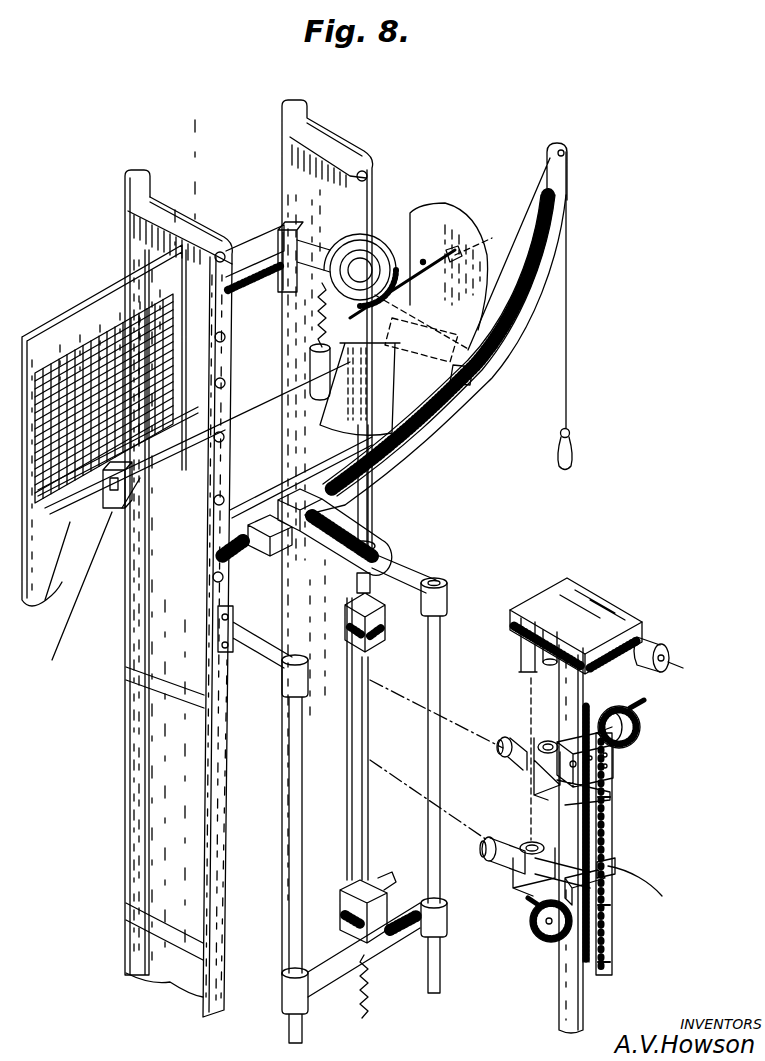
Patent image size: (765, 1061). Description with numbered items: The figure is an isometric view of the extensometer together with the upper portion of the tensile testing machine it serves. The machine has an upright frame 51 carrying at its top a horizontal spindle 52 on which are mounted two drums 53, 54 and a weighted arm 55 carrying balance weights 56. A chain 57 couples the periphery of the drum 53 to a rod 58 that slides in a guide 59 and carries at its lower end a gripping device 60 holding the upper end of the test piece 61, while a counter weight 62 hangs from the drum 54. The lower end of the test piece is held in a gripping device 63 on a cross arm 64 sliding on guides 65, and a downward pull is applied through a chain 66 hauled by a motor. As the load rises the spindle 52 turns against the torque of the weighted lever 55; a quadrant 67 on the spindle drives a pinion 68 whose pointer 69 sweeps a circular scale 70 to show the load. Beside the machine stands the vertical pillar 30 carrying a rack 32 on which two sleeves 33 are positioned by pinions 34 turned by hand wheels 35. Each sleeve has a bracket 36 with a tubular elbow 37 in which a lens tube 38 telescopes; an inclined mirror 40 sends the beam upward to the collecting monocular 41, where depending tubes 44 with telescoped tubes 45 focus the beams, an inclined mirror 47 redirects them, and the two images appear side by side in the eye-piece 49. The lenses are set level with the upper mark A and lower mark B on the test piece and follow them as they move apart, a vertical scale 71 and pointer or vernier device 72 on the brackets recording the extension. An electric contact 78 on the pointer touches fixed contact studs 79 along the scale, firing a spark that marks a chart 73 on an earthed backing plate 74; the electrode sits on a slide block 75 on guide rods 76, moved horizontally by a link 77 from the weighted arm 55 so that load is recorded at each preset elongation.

The vertical pillar 30 is at (568, 696).
The rack 32 is at (588, 733).
The sleeves 33 is at (546, 742).
The pinion 34 is at (610, 760).
The hand wheel 35 is at (627, 722).
The bracket 36 is at (538, 746).
The tubular elbow 37 is at (520, 768).
The tube 38 is at (498, 757).
The inclined mirror 40 is at (547, 790).
The collecting monocular 41 is at (605, 597).
The tubes 44 is at (527, 640).
The tube 45 is at (527, 662).
The inclined mirror 47 is at (537, 604).
The eye-piece 49 is at (647, 645).
The upright frame 51 is at (313, 165).
The horizontal spindle 52 is at (267, 230).
The drum 53 is at (372, 253).
The drum 54 is at (288, 232).
The arm 55 is at (446, 420).
The balance weights 56 is at (528, 350).
The chain 57 is at (312, 335).
The rod 58 is at (366, 516).
The guide 59 is at (385, 562).
The gripping device 60 is at (385, 627).
The test piece 61 is at (368, 805).
The counter weight 62 is at (314, 361).
The gripping device 63 is at (380, 884).
The cross arm 64 is at (388, 950).
The guides 65 is at (296, 852).
The chain 66 is at (360, 1018).
The quadrant 67 is at (420, 312).
The pinion 68 is at (373, 352).
The pointer 69 is at (457, 244).
The circular scale 70 is at (434, 213).
The vertical scale 71 is at (612, 838).
The pointer or vernier device 72 is at (566, 890).
The chart 73 is at (112, 330).
The backing plate 74 is at (68, 338).
The slide block 75 is at (118, 512).
The guide rods 76 is at (72, 582).
The link 77 is at (266, 413).
The electric contact 78 is at (616, 870).
The contact studs 79 is at (606, 797).
The upper mark A is at (368, 682).
The lower mark B is at (366, 761).